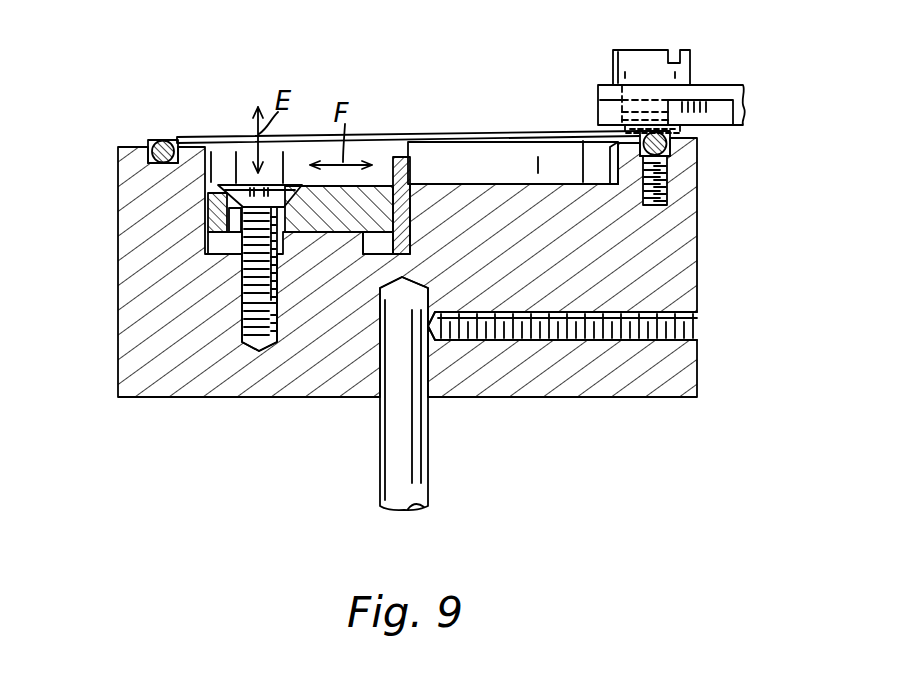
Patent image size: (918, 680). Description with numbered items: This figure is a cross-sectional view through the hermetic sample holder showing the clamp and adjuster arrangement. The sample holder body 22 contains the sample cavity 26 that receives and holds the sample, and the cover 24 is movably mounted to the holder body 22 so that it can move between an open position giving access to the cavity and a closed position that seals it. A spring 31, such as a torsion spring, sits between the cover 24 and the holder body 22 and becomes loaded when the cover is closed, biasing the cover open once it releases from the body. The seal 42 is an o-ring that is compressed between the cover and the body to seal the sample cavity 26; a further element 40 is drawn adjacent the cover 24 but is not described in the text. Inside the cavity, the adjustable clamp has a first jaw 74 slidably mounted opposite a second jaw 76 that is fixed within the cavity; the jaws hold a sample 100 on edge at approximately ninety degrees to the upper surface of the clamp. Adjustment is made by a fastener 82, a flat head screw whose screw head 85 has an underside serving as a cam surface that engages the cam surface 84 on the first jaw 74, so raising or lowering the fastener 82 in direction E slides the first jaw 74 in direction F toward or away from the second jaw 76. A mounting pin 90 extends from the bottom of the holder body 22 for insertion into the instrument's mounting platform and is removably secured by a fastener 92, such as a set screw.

The sample holder body 22 is at (699, 211).
The cover 24 is at (719, 84).
The sample cavity 26 is at (512, 165).
The spring 31 is at (597, 97).
The knob 40 is at (648, 43).
The seal 42 is at (163, 140).
The first jaw 74 is at (373, 192).
The second jaw 76 is at (452, 193).
The fastener 82 is at (228, 273).
The cam surface 84 is at (283, 200).
The screw head 85 is at (238, 184).
The mounting pin 90 is at (432, 432).
The fastener 92 is at (703, 312).
The sample 100 is at (402, 158).